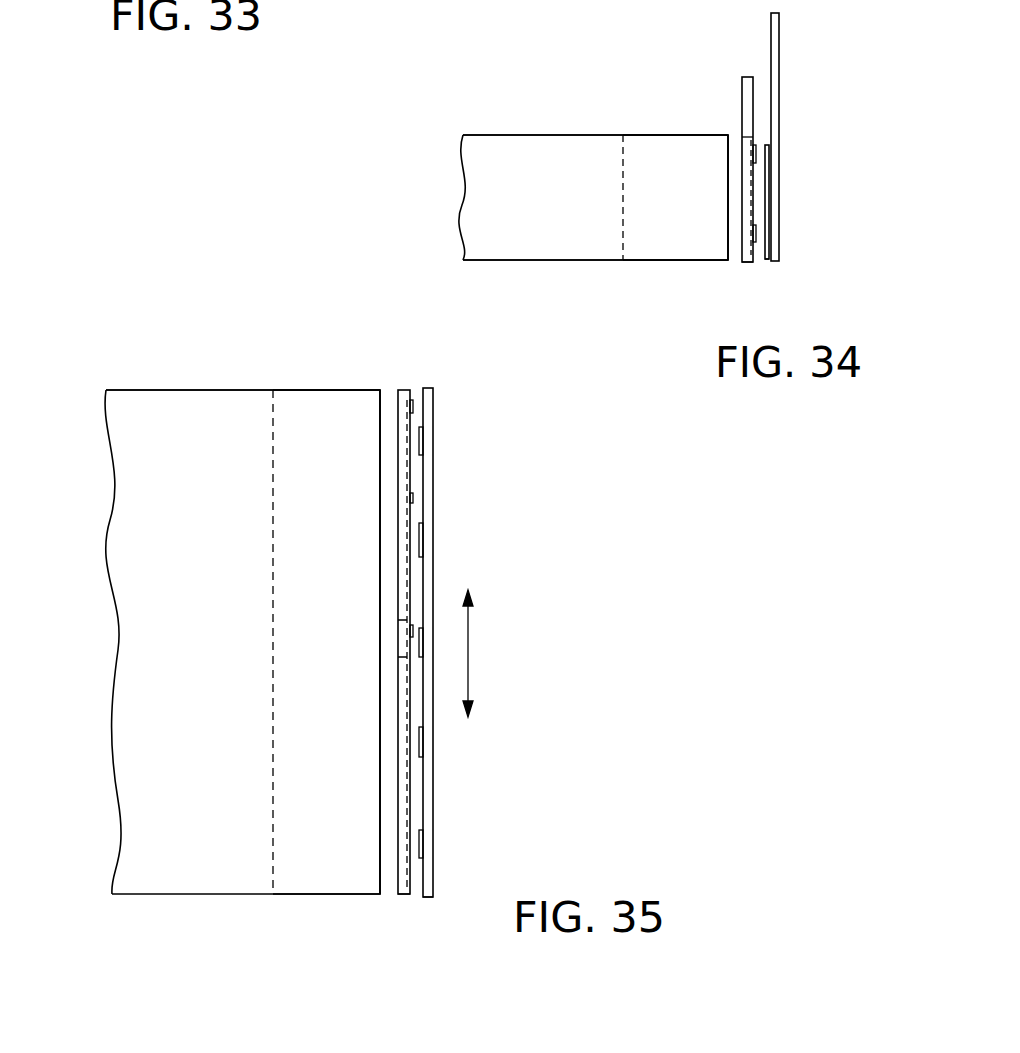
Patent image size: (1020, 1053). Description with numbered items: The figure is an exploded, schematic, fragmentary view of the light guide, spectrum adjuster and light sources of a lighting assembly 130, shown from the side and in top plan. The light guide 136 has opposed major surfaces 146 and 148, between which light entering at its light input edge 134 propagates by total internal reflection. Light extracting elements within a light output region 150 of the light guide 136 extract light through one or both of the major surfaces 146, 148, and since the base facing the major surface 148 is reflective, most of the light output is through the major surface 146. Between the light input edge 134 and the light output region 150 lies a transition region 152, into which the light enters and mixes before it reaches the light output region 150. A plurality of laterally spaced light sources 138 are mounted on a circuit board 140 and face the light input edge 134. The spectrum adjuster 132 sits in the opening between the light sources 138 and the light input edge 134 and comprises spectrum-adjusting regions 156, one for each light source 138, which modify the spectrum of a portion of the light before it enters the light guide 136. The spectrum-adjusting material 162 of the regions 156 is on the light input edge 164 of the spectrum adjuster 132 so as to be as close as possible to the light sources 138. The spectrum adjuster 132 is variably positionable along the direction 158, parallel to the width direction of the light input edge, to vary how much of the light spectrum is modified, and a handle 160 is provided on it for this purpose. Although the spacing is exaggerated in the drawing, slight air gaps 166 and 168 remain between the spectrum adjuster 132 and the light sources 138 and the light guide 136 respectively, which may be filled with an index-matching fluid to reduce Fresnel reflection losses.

In FIG. 34, the lighting assembly 130 is at (613, 102).
In FIG. 35, the lighting assembly 130 is at (232, 360).
In FIG. 34, the spectrum adjuster 132 is at (748, 206).
In FIG. 35, the spectrum adjuster 132 is at (403, 678).
In FIG. 34, the light input edge 134 is at (727, 163).
In FIG. 35, the light input edge 134 is at (380, 782).
In FIG. 34, the light guide 136 is at (558, 148).
In FIG. 35, the light guide 136 is at (183, 403).
In FIG. 34, the light source 138 is at (770, 213).
In FIG. 35, the light source 138 is at (423, 438).
In FIG. 34, the circuit board 140 is at (776, 57).
In FIG. 35, the circuit board 140 is at (428, 585).
In FIG. 34, the major surface 146 is at (527, 135).
In FIG. 35, the major surface 146 is at (151, 488).
In FIG. 34, the major surface 148 is at (532, 261).
In FIG. 34, the light output region 150 is at (497, 152).
In FIG. 35, the light output region 150 is at (138, 403).
In FIG. 34, the transition region 152 is at (667, 146).
In FIG. 35, the transition region 152 is at (320, 400).
In FIG. 34, the spectrum-adjusting region 156 is at (757, 185).
In FIG. 35, the spectrum-adjusting region 156 is at (408, 418).
In FIG. 35, the direction 158 is at (469, 650).
In FIG. 34, the handle 160 is at (743, 88).
In FIG. 35, the handle 160 is at (398, 633).
In FIG. 34, the spectrum-adjusting material 162 is at (758, 160).
In FIG. 35, the spectrum-adjusting material 162 is at (413, 503).
In FIG. 34, the light input edge of the spectrum adjuster 164 is at (757, 233).
In FIG. 35, the light input edge of the spectrum adjuster 164 is at (409, 714).
In FIG. 34, the air gap 166 is at (762, 261).
In FIG. 35, the air gap 166 is at (411, 899).
In FIG. 34, the air gap 168 is at (733, 259).
In FIG. 35, the air gap 168 is at (386, 897).